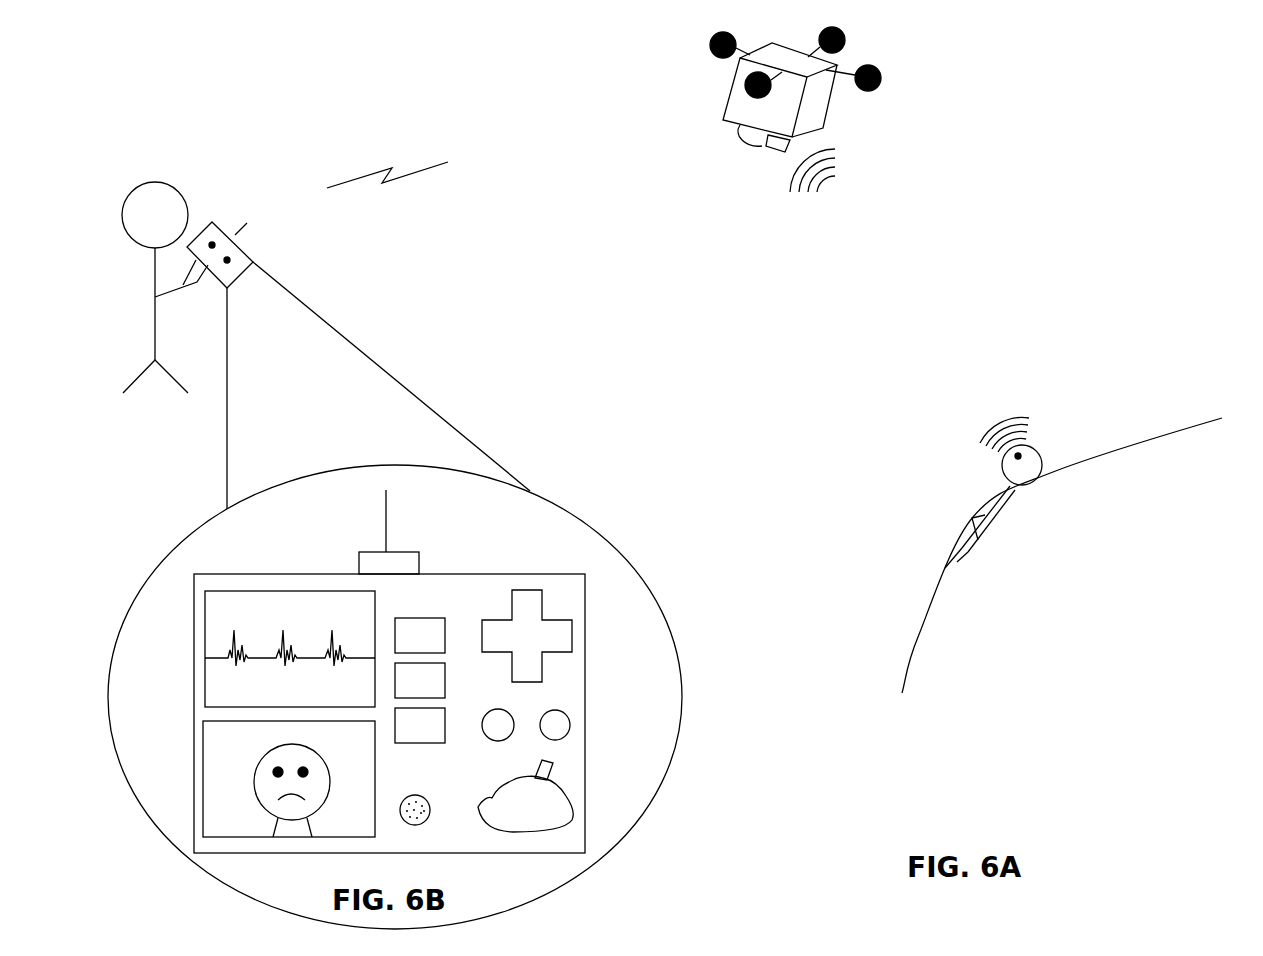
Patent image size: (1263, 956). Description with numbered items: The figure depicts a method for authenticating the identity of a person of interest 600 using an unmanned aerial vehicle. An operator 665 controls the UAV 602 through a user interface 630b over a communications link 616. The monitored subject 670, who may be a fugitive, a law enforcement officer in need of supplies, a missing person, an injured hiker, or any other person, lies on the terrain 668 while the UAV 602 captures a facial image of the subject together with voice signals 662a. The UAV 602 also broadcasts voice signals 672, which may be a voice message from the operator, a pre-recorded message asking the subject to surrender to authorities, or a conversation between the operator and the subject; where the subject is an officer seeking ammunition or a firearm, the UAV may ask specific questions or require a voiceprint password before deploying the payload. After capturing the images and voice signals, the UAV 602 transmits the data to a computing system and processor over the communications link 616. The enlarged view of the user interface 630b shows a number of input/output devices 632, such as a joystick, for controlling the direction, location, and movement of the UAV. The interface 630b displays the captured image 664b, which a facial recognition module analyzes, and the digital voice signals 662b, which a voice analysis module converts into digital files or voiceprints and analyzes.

In FIG. 6A, the method for authenticating the identity of a person of interest 600 is at (1180, 115).
In FIG. 6A, the UAV 602 is at (848, 63).
In FIG. 6B, the communications link 616 is at (420, 168).
In FIG. 6B, the user interface 630b is at (243, 247).
In FIG. 6B, the input/output devices 632 is at (542, 637).
In FIG. 6A, the voice signals 662a is at (1022, 418).
In FIG. 6B, the digital voice signals 662b is at (233, 650).
In FIG. 6B, the captured image 664b is at (297, 827).
In FIG. 6B, the operator 665 is at (135, 188).
In FIG. 6A, the earth surface 668 is at (917, 637).
In FIG. 6A, the monitored subject 670 is at (995, 512).
In FIG. 6A, the voice signals 672 is at (818, 198).